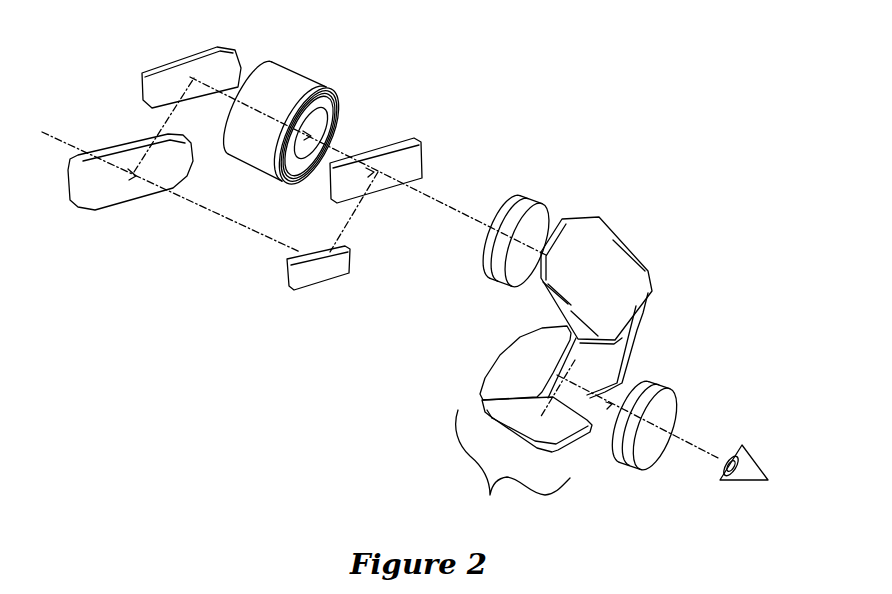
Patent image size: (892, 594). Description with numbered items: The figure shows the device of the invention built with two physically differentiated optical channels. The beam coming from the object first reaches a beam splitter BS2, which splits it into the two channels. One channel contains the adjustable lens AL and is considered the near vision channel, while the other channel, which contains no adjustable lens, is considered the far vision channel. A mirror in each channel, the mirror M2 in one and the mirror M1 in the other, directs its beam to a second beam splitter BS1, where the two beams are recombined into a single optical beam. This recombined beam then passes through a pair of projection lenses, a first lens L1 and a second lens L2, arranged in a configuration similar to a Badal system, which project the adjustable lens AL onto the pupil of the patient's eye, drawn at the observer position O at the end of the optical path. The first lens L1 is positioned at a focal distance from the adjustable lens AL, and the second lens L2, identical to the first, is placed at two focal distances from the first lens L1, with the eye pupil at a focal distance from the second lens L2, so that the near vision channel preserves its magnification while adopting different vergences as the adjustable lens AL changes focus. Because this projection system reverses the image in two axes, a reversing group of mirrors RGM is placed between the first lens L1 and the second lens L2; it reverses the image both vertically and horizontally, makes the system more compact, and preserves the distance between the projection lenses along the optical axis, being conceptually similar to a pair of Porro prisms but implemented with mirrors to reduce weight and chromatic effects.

The mirror M2 is at (191, 67).
The adjustable lens AL is at (287, 119).
The beam splitter BS1 is at (376, 158).
The beam splitter BS2 is at (130, 190).
The mirror M1 is at (318, 283).
The first lens L1 is at (520, 232).
The second lens L2 is at (647, 442).
The reversing group of mirrors RGM is at (524, 426).
The observer eye O is at (745, 453).